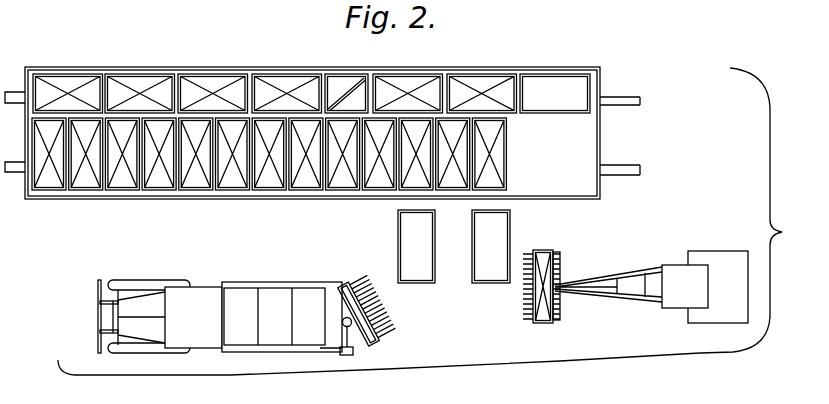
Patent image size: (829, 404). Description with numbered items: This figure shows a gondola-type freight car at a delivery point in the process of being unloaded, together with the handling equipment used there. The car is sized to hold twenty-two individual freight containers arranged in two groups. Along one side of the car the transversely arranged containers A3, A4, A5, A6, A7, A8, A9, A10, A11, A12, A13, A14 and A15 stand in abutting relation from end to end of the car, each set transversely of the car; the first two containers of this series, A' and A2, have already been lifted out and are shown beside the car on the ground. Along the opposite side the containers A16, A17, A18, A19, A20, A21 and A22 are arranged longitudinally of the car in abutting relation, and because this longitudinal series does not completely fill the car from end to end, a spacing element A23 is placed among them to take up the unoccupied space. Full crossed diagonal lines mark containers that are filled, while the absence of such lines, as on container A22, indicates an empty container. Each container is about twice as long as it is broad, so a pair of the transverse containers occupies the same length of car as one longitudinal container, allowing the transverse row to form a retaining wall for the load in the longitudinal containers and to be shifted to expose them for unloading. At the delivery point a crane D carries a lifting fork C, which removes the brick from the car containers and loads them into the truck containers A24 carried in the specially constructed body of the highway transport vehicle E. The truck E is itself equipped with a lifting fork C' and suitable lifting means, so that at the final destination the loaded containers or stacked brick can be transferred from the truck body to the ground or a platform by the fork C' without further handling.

The container A3 is at (49, 154).
The container A4 is at (86, 154).
The container A5 is at (122, 154).
The container A6 is at (159, 154).
The container A7 is at (196, 154).
The container A8 is at (233, 154).
The container A9 is at (269, 154).
The container A10 is at (306, 154).
The container A11 is at (343, 154).
The container A12 is at (379, 154).
The container A13 is at (416, 154).
The container A14 is at (453, 154).
The container A15 is at (489, 154).
The container A16 is at (68, 93).
The container A17 is at (140, 93).
The container A18 is at (213, 93).
The container A19 is at (287, 93).
The container A20 is at (408, 93).
The container A21 is at (482, 93).
The container A22 is at (555, 93).
The spacing element A23 is at (340, 82).
The truck containers A24 is at (310, 300).
The container A' is at (400, 246).
The container A2 is at (508, 224).
The lifting fork C is at (592, 286).
The lifting fork C' is at (372, 316).
The crane D is at (703, 297).
The highway transport vehicle E is at (225, 313).